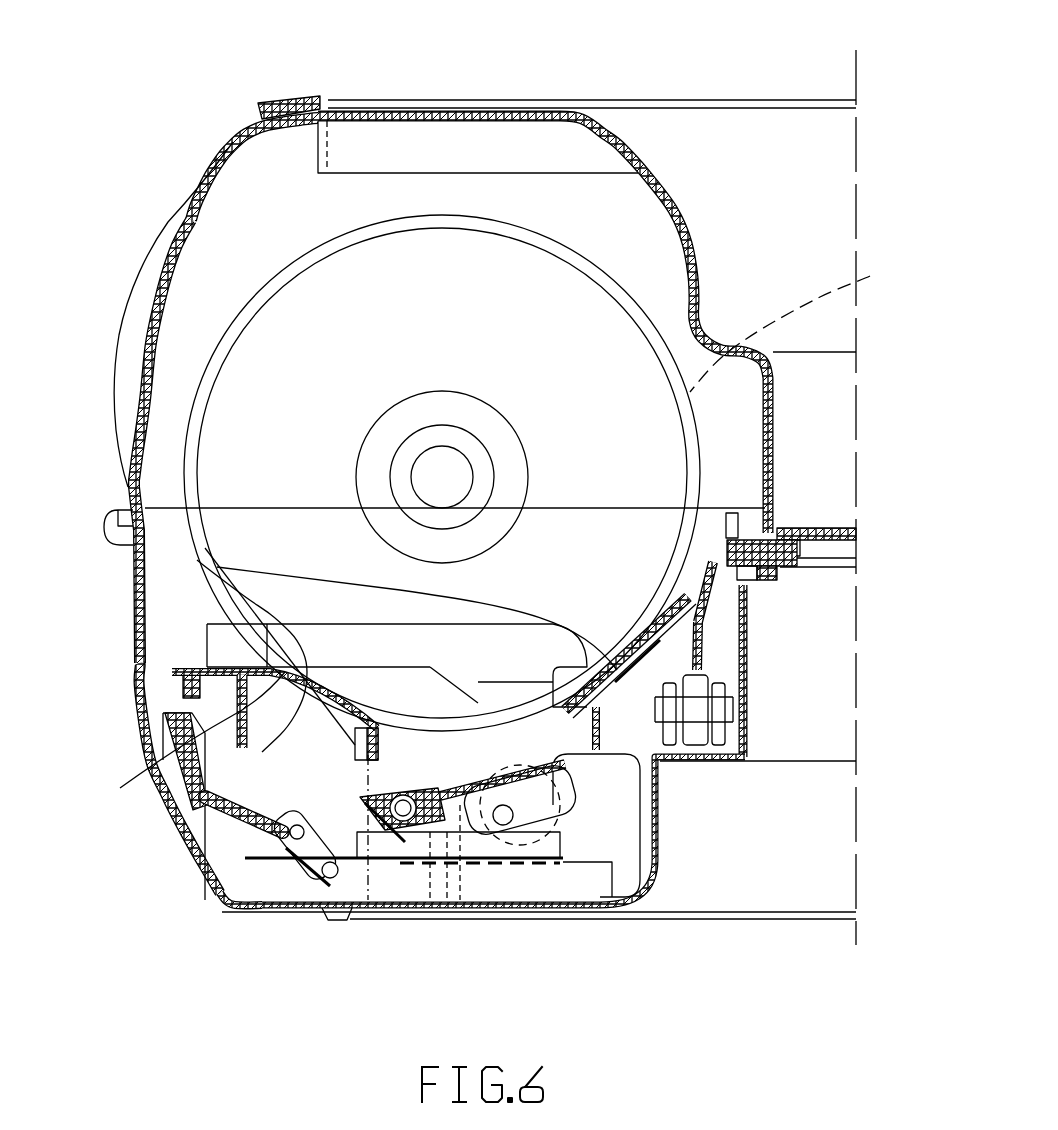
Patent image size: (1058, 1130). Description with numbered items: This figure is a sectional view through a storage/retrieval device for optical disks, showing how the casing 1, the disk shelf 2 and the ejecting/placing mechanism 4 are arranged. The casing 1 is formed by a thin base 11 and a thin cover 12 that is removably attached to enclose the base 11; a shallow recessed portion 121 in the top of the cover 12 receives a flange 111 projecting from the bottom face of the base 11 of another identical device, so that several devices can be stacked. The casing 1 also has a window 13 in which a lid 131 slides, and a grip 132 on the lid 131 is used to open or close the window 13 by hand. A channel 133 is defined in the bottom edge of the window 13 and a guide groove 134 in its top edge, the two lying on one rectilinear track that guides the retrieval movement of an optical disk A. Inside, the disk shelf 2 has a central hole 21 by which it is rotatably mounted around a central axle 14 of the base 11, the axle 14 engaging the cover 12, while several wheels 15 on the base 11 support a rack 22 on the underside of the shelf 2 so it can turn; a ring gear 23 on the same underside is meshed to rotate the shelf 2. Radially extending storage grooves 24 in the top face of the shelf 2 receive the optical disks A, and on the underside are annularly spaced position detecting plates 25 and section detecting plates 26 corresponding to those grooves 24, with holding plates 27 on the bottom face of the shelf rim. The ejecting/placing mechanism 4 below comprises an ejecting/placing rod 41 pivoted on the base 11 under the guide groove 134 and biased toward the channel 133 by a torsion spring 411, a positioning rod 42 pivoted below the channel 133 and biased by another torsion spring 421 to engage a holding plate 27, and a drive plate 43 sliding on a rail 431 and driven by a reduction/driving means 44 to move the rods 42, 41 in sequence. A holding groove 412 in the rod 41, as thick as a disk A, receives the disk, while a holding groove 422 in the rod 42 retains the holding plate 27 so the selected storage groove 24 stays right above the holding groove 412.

The casing 1 is at (801, 95).
The thin cover 12 is at (502, 112).
The lid 131 is at (230, 142).
The window 13 is at (165, 365).
The grip 132 is at (153, 262).
The shallow recessed portion 121 is at (338, 96).
The guide groove 134 is at (390, 138).
The optical disk A is at (789, 321).
The central hole 21 is at (773, 533).
The central axle 14 is at (743, 593).
The rack 22 is at (702, 663).
The wheels 15 is at (697, 718).
The storage grooves 24 is at (217, 567).
The disk shelf 2 is at (190, 623).
The channel 133 is at (128, 634).
The holding plates 27 is at (183, 690).
The position detecting plates 25 is at (182, 735).
The holding groove 422 is at (180, 758).
The positioning rod 42 is at (358, 741).
The ring gear 23 is at (355, 745).
The torsion spring 421 is at (255, 912).
The thin base 11 is at (462, 921).
The flange 111 is at (330, 912).
The ejecting/placing mechanism 4 is at (350, 902).
The ejecting/placing rod 41 is at (497, 870).
The reduction/driving means 44 is at (557, 860).
The torsion spring 411 is at (404, 921).
The drive plate 43 is at (547, 870).
The rail 431 is at (568, 763).
The holding groove 412 is at (603, 750).
The section detecting plates 26 is at (658, 790).